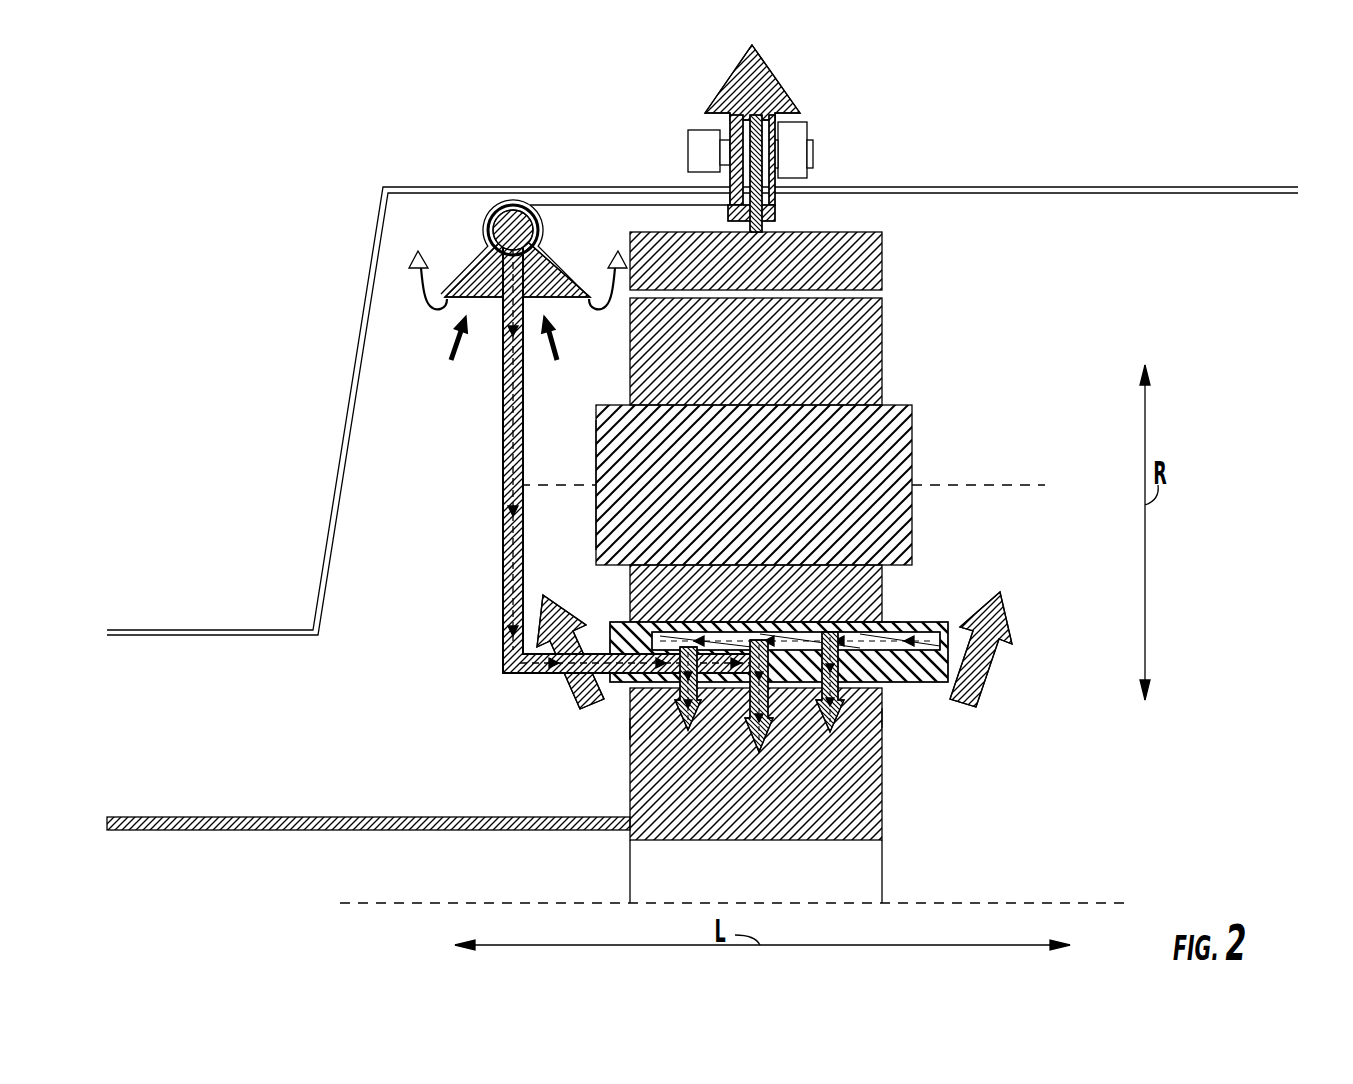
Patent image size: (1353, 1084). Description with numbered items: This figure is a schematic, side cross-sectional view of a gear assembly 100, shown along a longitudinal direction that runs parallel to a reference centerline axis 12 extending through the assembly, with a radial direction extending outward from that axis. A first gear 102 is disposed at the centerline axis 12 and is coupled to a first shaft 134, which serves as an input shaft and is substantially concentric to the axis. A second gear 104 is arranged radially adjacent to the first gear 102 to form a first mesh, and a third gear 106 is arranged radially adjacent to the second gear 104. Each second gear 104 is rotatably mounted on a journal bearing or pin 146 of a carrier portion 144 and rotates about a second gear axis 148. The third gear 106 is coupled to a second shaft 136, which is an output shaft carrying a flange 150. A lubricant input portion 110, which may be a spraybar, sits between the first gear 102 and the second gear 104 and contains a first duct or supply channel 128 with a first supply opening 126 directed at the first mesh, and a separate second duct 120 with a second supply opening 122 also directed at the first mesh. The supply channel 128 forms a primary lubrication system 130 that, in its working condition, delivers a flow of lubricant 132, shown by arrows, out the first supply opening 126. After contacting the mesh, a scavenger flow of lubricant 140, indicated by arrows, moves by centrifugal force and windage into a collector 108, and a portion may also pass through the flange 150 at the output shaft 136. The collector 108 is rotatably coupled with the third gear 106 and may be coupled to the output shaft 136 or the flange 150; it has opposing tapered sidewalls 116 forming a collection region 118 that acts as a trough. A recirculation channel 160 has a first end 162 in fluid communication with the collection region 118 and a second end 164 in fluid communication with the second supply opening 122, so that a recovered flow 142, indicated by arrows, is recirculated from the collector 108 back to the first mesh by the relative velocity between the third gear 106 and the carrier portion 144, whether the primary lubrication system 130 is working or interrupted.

The gear assembly 100 is at (292, 149).
The first gear 102 is at (884, 810).
The second gear 104 is at (884, 340).
The third gear 106 is at (884, 255).
The collector 108 is at (478, 262).
The lubricant input portion 110 is at (845, 685).
The sidewalls 116 is at (432, 270).
The collection region 118 is at (450, 340).
The second duct 120 is at (542, 682).
The second supply opening 122 is at (752, 712).
The first supply opening 126 is at (632, 728).
The supply channel 128 is at (925, 622).
The primary lubrication system 130 is at (796, 641).
The flow of lubricant 132 is at (870, 717).
The first shaft 134 is at (200, 817).
The second shaft 136 is at (200, 630).
The scavenger flow of lubricant 140 is at (790, 85).
The recovered flow 142 is at (512, 455).
The carrier portion 144 is at (597, 445).
The journal bearing or pin 146 is at (885, 470).
The second gear axis 148 is at (1018, 485).
The flange 150 is at (838, 150).
The recirculation channel 160 is at (505, 520).
The first end 162 is at (517, 212).
The second end 164 is at (503, 665).
The centerline axis 12 is at (470, 903).